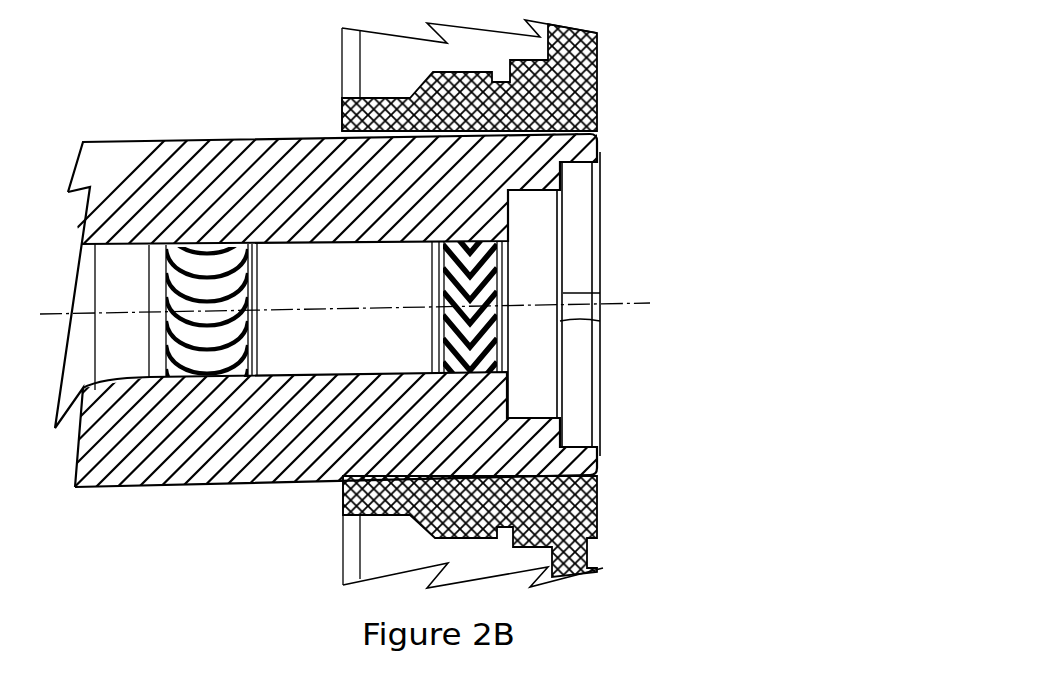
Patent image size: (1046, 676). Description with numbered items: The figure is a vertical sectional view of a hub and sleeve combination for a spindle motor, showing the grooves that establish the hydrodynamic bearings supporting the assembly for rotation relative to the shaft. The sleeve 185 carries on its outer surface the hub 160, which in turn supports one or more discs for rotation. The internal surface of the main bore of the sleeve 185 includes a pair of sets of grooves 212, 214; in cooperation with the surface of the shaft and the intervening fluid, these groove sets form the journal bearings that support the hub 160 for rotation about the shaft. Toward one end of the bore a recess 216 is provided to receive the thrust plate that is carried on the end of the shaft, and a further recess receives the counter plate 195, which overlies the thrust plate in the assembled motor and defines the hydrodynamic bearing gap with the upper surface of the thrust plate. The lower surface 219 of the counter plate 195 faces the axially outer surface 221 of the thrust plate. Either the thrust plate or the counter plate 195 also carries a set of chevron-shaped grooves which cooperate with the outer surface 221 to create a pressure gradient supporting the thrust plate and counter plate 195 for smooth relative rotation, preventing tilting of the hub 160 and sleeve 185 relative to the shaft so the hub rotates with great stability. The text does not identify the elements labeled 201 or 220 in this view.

The hub 160 is at (598, 82).
The sleeve 185 is at (600, 152).
The counter plate 195 is at (578, 183).
The housing body 201 is at (122, 335).
The set of grooves 212 is at (253, 306).
The set of grooves 214 is at (440, 285).
The recess 216 is at (533, 207).
The lower surface of the counter plate 219 is at (563, 295).
The ring face 220 is at (510, 220).
The axially outer surface of the thrust plate 221 is at (560, 320).